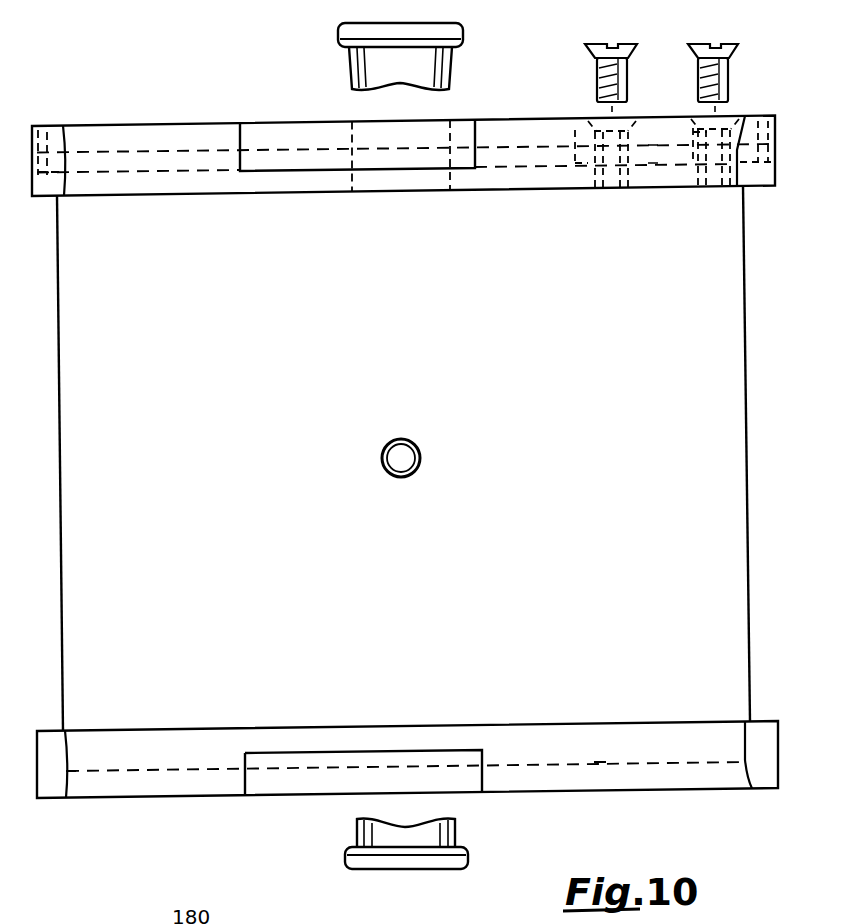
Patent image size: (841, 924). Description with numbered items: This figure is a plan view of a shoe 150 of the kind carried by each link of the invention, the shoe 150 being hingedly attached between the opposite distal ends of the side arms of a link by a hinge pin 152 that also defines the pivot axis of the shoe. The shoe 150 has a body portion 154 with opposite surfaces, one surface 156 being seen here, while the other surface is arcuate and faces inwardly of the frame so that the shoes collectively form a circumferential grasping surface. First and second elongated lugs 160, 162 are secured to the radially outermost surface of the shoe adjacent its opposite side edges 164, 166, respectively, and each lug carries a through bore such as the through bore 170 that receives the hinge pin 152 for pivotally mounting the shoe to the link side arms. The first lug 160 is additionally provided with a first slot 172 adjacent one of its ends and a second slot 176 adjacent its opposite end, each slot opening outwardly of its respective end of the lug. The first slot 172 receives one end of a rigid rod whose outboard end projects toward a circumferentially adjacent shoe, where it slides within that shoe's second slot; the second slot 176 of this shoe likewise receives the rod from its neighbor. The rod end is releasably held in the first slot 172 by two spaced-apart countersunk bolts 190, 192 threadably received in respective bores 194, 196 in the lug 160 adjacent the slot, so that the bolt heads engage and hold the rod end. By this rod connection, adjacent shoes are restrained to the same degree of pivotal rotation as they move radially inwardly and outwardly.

The shoe 150 is at (422, 450).
The hinge pin 152 is at (350, 848).
The body portion 154 is at (718, 411).
The surface 156 is at (293, 410).
The first elongated lug 160 is at (411, 140).
The second elongated lug 162 is at (407, 757).
The side edge 164 is at (600, 758).
The side edge 166 is at (532, 140).
The through bore 170 is at (427, 133).
The first slot 172 is at (652, 135).
The second slot 176 is at (155, 144).
The countersunk bolt 190 is at (620, 74).
The countersunk bolt 192 is at (725, 74).
The bore 194 is at (628, 120).
The bore 196 is at (732, 118).